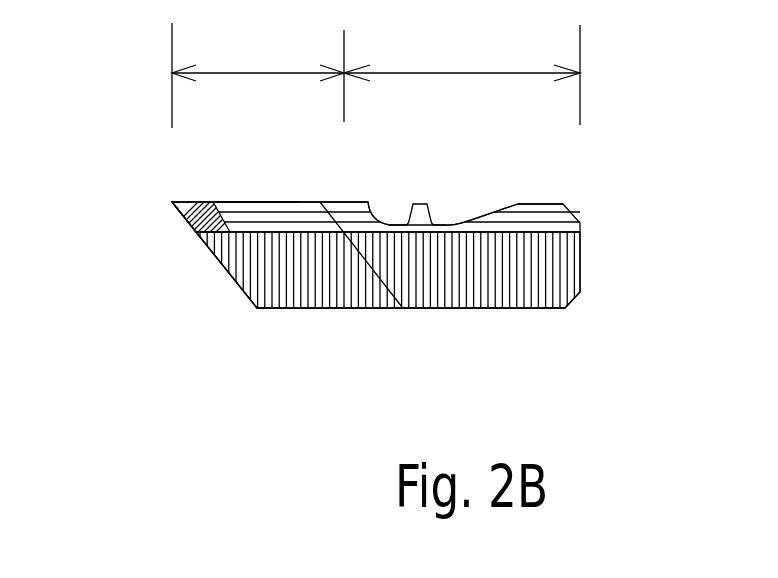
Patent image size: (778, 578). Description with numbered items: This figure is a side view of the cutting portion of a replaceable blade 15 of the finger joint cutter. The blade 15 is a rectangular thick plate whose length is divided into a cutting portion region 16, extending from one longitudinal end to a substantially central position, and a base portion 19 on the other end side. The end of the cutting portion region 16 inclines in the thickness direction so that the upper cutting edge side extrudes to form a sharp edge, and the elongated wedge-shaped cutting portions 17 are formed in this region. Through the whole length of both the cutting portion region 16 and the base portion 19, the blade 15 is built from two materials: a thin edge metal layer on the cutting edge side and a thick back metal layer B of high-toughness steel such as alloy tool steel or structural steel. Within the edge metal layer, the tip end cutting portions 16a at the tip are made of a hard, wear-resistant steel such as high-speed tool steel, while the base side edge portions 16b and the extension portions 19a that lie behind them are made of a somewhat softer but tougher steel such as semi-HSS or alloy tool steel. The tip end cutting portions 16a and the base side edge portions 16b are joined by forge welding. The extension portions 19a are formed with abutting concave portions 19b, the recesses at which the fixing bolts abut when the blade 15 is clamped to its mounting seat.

The replaceable blade 15 is at (583, 213).
The cutting portion region 16 is at (258, 70).
The base portion 19 is at (462, 68).
The tip end cutting portion 16a is at (193, 201).
The base side edge portion 16b is at (270, 201).
The extension portion 19a is at (352, 202).
The abutting concave portion 19b is at (447, 225).
The cutting portion 17 is at (240, 285).
The back metal layer B is at (550, 287).